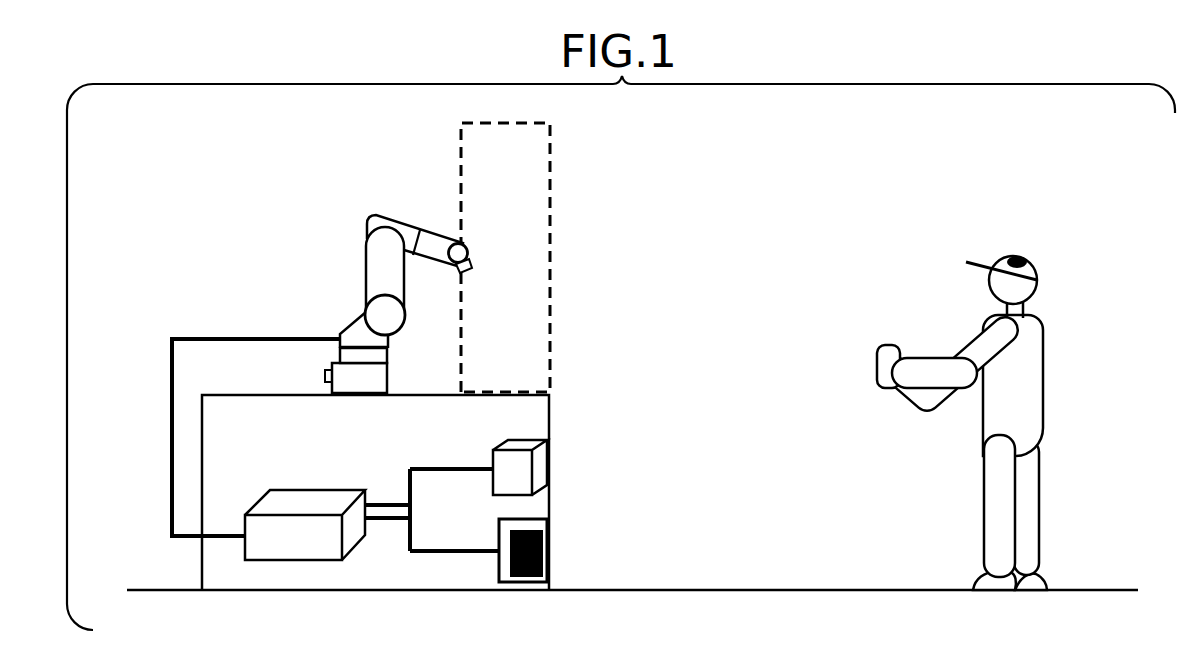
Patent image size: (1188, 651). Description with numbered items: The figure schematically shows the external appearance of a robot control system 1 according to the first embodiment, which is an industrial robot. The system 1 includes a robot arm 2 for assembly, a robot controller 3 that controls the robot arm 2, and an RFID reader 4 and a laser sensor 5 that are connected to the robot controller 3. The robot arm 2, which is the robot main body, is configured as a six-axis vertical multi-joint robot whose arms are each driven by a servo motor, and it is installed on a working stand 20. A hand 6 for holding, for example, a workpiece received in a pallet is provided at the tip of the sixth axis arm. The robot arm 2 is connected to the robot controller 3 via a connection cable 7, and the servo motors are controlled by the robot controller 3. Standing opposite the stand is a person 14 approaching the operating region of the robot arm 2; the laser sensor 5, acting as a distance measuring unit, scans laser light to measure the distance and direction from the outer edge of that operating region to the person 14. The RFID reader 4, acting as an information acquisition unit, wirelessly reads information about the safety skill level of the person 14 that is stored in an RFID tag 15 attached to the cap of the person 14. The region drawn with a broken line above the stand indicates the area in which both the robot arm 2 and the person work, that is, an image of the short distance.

The robot control system 1 is at (298, 274).
The robot arm 2 is at (374, 199).
The robot controller 3 is at (265, 541).
The RFID reader 4 is at (518, 445).
The laser sensor 5 is at (530, 527).
The hand 6 is at (458, 266).
The connection cable 7 is at (171, 374).
The person 14 is at (1045, 348).
The RFID tag 15 is at (1025, 259).
The working stand 20 is at (275, 393).